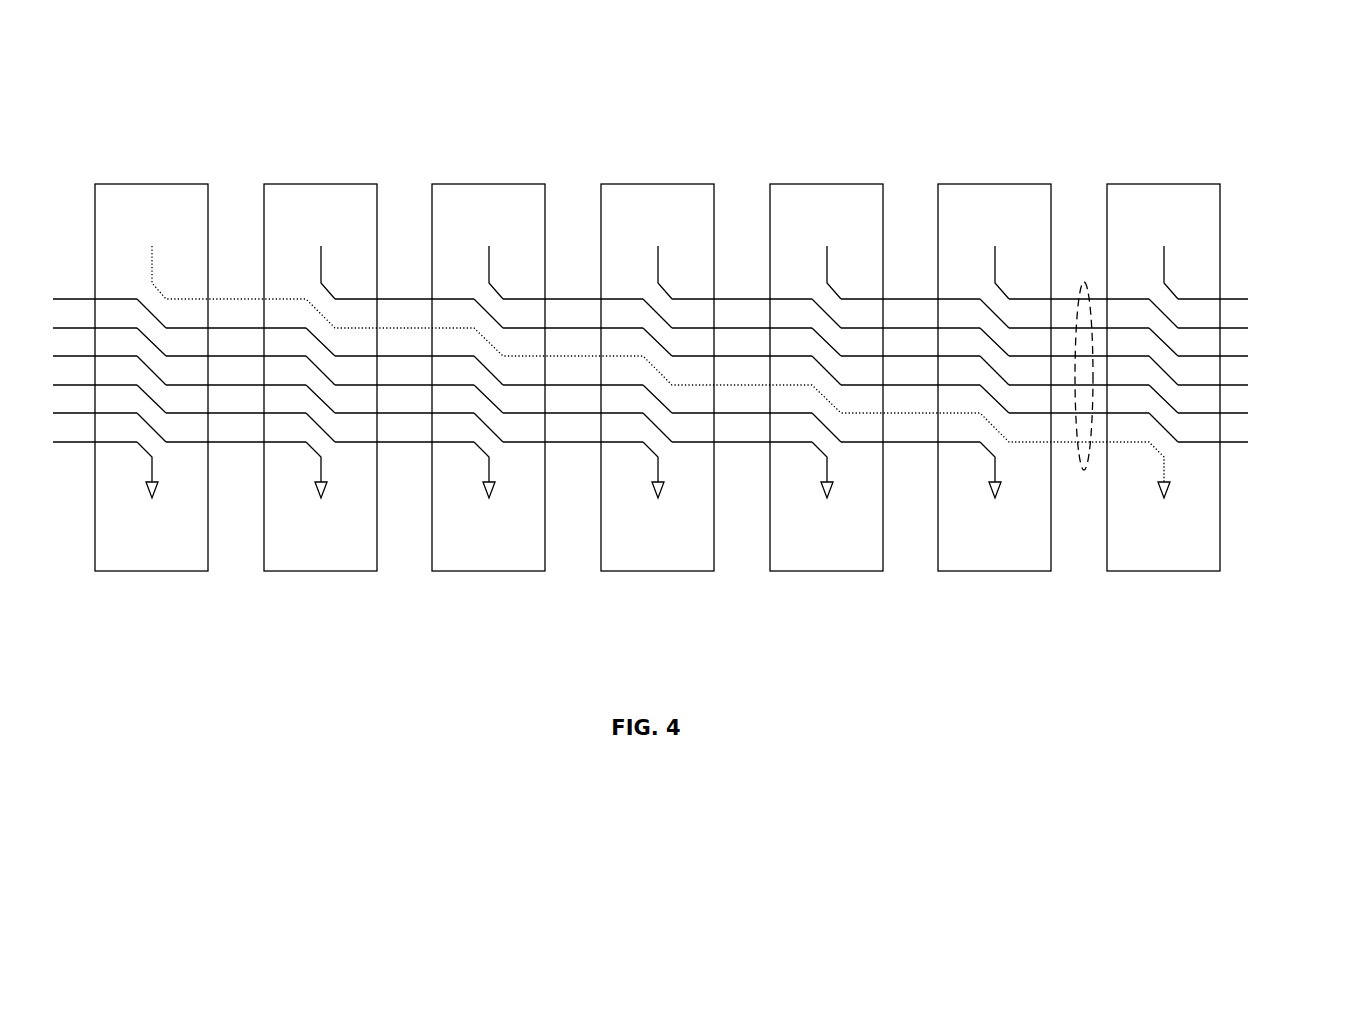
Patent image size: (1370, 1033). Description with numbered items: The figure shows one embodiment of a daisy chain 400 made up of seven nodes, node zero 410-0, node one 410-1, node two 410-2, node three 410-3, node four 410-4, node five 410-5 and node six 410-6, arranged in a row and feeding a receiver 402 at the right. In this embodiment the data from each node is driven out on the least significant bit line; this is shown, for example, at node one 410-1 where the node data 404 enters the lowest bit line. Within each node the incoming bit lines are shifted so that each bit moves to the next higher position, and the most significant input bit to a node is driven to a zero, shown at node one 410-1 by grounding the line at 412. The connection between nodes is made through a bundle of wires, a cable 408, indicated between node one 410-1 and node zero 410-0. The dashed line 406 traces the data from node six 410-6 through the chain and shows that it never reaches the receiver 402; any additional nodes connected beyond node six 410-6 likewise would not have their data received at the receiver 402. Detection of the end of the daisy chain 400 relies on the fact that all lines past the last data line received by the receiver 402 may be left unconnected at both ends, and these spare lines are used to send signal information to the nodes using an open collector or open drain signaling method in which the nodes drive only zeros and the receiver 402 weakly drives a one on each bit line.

The daisy chain 400 is at (1127, 67).
The receiver 402 is at (1248, 594).
The node 1 data 404 is at (995, 272).
The dashed line 406 is at (215, 297).
The cable 408 is at (1086, 473).
The node 0 410-0 is at (1153, 558).
The node 1 410-1 is at (984, 558).
The node 2 410-2 is at (816, 558).
The node 3 410-3 is at (647, 558).
The node 4 410-4 is at (478, 558).
The node 5 410-5 is at (310, 558).
The node 6 410-6 is at (141, 558).
The grounded line 412 is at (990, 500).